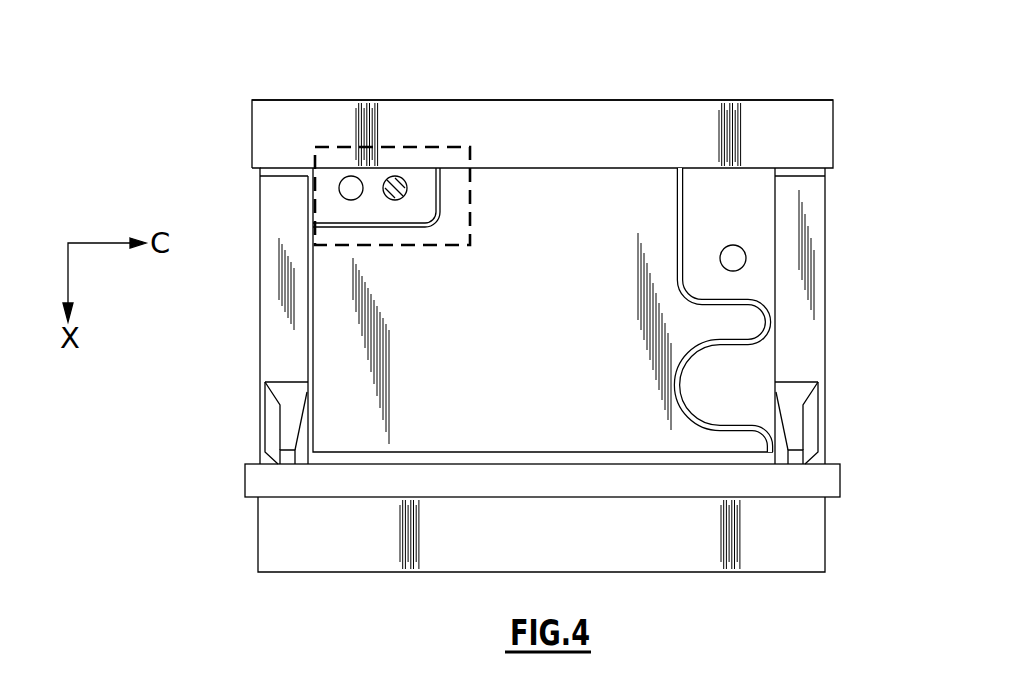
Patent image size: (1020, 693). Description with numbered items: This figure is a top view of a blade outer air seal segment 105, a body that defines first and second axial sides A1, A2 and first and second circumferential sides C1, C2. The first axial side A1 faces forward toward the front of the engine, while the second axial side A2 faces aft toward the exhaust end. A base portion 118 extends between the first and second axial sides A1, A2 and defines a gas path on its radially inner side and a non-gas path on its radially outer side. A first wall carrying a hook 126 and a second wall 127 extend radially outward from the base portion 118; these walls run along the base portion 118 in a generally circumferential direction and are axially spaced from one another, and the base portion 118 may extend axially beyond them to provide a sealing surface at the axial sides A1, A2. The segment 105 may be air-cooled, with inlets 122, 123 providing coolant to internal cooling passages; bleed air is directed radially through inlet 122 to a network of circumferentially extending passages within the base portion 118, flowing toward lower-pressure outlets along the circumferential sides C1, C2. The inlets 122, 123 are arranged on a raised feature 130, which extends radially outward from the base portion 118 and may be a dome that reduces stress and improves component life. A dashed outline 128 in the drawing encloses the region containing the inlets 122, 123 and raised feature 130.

The BOAS segment 105 is at (833, 240).
The base portion 118 is at (350, 360).
The inlet 122 is at (339, 190).
The inlet 123 is at (395, 200).
The hook 126 is at (817, 139).
The second wall 127 is at (830, 482).
The detail region 128 is at (316, 156).
The raised feature 130 is at (337, 212).
The first axial side A1 is at (740, 100).
The second axial side A2 is at (705, 572).
The first circumferential side C1 is at (260, 298).
The second circumferential side C2 is at (825, 343).